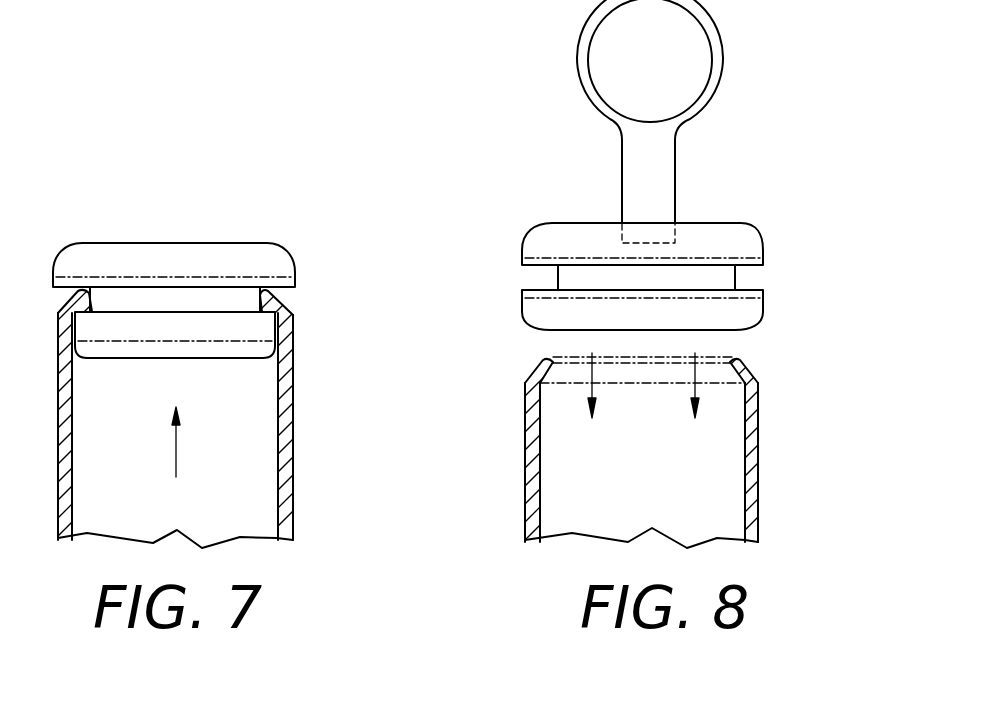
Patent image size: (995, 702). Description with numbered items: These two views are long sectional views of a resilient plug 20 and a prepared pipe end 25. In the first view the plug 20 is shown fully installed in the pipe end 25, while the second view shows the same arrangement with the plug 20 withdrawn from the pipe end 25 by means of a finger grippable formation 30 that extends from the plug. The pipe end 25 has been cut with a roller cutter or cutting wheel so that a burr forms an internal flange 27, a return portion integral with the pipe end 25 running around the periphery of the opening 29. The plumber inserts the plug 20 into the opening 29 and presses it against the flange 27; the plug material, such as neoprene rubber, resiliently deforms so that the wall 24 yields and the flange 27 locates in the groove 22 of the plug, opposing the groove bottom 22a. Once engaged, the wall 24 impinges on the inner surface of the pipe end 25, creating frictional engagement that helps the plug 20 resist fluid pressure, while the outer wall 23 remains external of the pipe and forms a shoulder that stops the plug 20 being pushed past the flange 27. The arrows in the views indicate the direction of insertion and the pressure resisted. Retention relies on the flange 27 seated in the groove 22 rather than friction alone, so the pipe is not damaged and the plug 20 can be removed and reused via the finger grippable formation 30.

In FIG. 7, the plug 20 is at (208, 243).
In FIG. 8, the plug 20 is at (727, 213).
In FIG. 7, the groove 22 is at (162, 304).
In FIG. 7, the groove bottom 22a is at (205, 302).
In FIG. 8, the groove bottom 22a is at (738, 278).
In FIG. 7, the wall 23 is at (112, 275).
In FIG. 8, the wall 23 is at (742, 248).
In FIG. 7, the wall 24 is at (115, 328).
In FIG. 8, the wall 24 is at (747, 308).
In FIG. 7, the pipe end 25 is at (293, 498).
In FIG. 8, the pipe end 25 is at (760, 512).
In FIG. 7, the flange 27 is at (282, 302).
In FIG. 8, the flange 27 is at (740, 363).
In FIG. 7, the opening 29 is at (238, 418).
In FIG. 8, the opening 29 is at (675, 450).
In FIG. 8, the finger grippable formation 30 is at (583, 42).